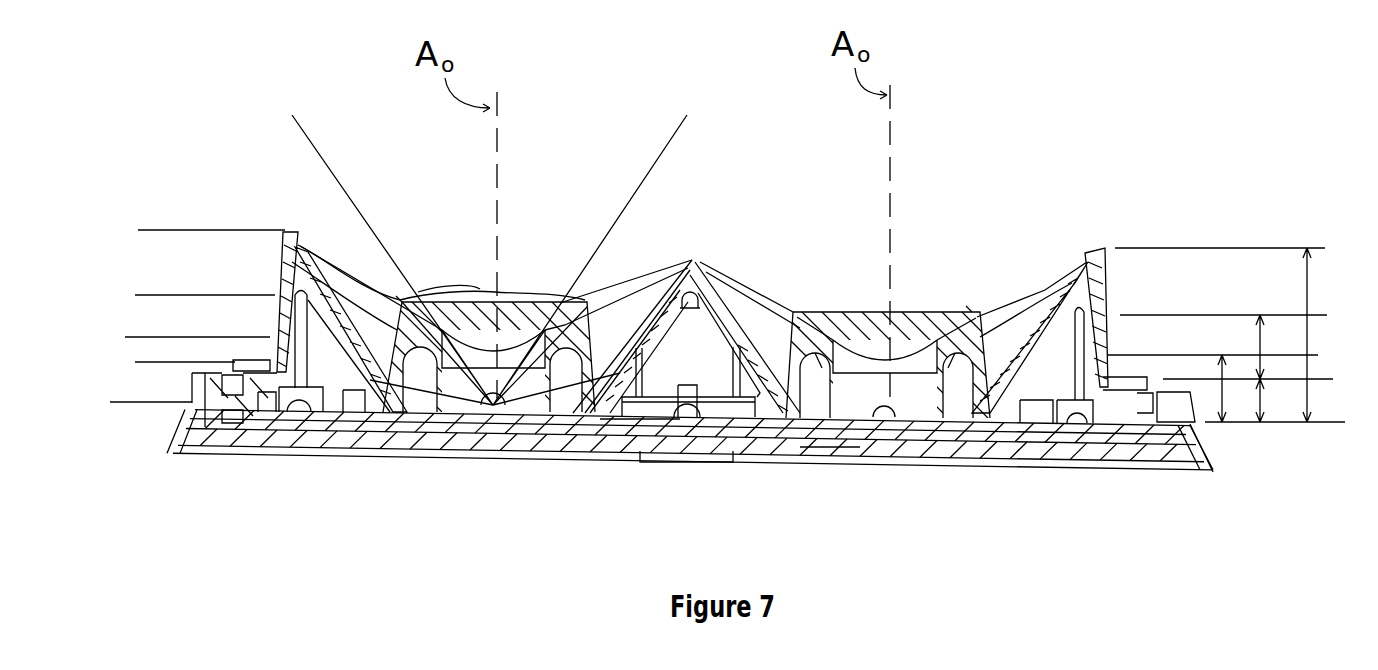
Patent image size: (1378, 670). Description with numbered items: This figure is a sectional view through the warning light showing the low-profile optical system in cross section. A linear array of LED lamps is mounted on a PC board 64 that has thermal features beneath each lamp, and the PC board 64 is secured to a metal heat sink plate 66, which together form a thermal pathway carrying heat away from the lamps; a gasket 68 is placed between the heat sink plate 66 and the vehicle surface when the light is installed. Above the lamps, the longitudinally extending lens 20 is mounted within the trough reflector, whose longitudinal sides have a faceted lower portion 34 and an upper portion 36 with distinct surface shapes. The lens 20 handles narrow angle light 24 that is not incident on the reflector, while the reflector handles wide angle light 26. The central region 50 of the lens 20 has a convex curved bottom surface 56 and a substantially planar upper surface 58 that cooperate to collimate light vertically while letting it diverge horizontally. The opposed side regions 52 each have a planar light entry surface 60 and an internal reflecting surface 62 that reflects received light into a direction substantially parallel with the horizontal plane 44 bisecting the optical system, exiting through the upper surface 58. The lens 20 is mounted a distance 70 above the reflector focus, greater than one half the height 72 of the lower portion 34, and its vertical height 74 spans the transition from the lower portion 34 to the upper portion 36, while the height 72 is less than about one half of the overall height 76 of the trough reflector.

The lens 20 is at (392, 286).
The narrow angle light 24 is at (399, 296).
The wide angle light 26 is at (525, 405).
The lower portion 34 is at (767, 333).
The upper portion 36 is at (713, 297).
The horizontal plane 44 is at (509, 146).
The central region 50 is at (480, 290).
The side regions 52 is at (557, 292).
The bottom surface 56 is at (925, 442).
The upper surface 58 is at (850, 312).
The light entry surface 60 is at (887, 382).
The internal reflecting surface 62 is at (823, 330).
The PC board 64 is at (638, 420).
The heat sink plate 66 is at (730, 440).
The gasket 68 is at (828, 447).
The distance 70 is at (1262, 418).
The height of the lower portion 72 is at (1222, 420).
The vertical height of the lens 74 is at (1263, 340).
The height of the trough reflector 76 is at (1307, 290).